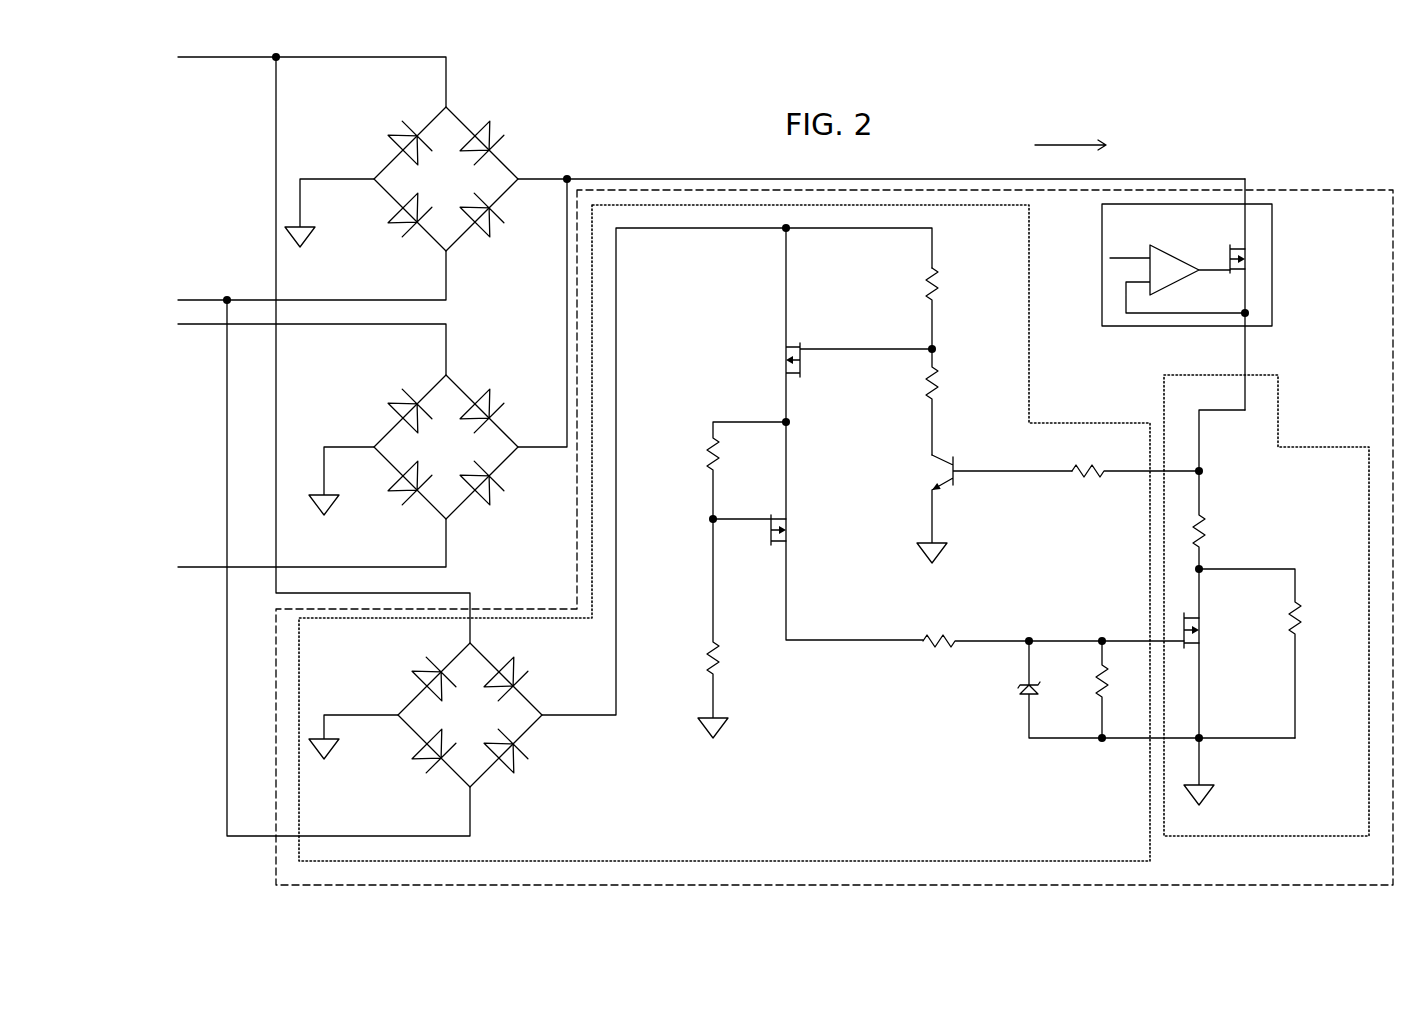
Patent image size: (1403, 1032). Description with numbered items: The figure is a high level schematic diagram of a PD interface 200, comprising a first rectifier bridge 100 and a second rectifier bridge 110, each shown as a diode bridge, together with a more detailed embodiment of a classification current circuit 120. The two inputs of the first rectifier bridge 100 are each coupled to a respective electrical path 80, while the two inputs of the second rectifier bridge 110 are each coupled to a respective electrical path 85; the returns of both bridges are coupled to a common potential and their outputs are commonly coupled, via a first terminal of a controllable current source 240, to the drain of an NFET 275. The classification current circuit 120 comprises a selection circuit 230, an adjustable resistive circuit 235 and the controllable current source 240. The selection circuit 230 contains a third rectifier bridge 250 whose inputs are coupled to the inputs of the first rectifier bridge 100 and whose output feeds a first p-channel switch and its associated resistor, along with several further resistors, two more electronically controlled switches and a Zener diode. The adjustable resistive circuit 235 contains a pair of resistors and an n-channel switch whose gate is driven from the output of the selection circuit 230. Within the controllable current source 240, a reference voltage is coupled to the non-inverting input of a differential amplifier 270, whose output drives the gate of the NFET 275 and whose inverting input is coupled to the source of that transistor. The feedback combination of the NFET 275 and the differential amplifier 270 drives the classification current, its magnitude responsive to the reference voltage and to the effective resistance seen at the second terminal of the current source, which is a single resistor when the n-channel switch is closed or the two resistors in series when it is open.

The electrical path 80 is at (201, 58).
The electrical path 85 is at (352, 324).
The first rectifier bridge 100 is at (437, 117).
The second rectifier bridge 110 is at (433, 386).
The classification current circuit 120 is at (1345, 189).
The PD interface 200 is at (1113, 106).
The selection circuit 230 is at (1030, 228).
The adjustable resistive circuit 235 is at (1164, 410).
The controllable current source 240 is at (1272, 253).
The third rectifier bridge 250 is at (532, 728).
The differential amplifier 270 is at (1180, 281).
The NFET 275 is at (1226, 258).